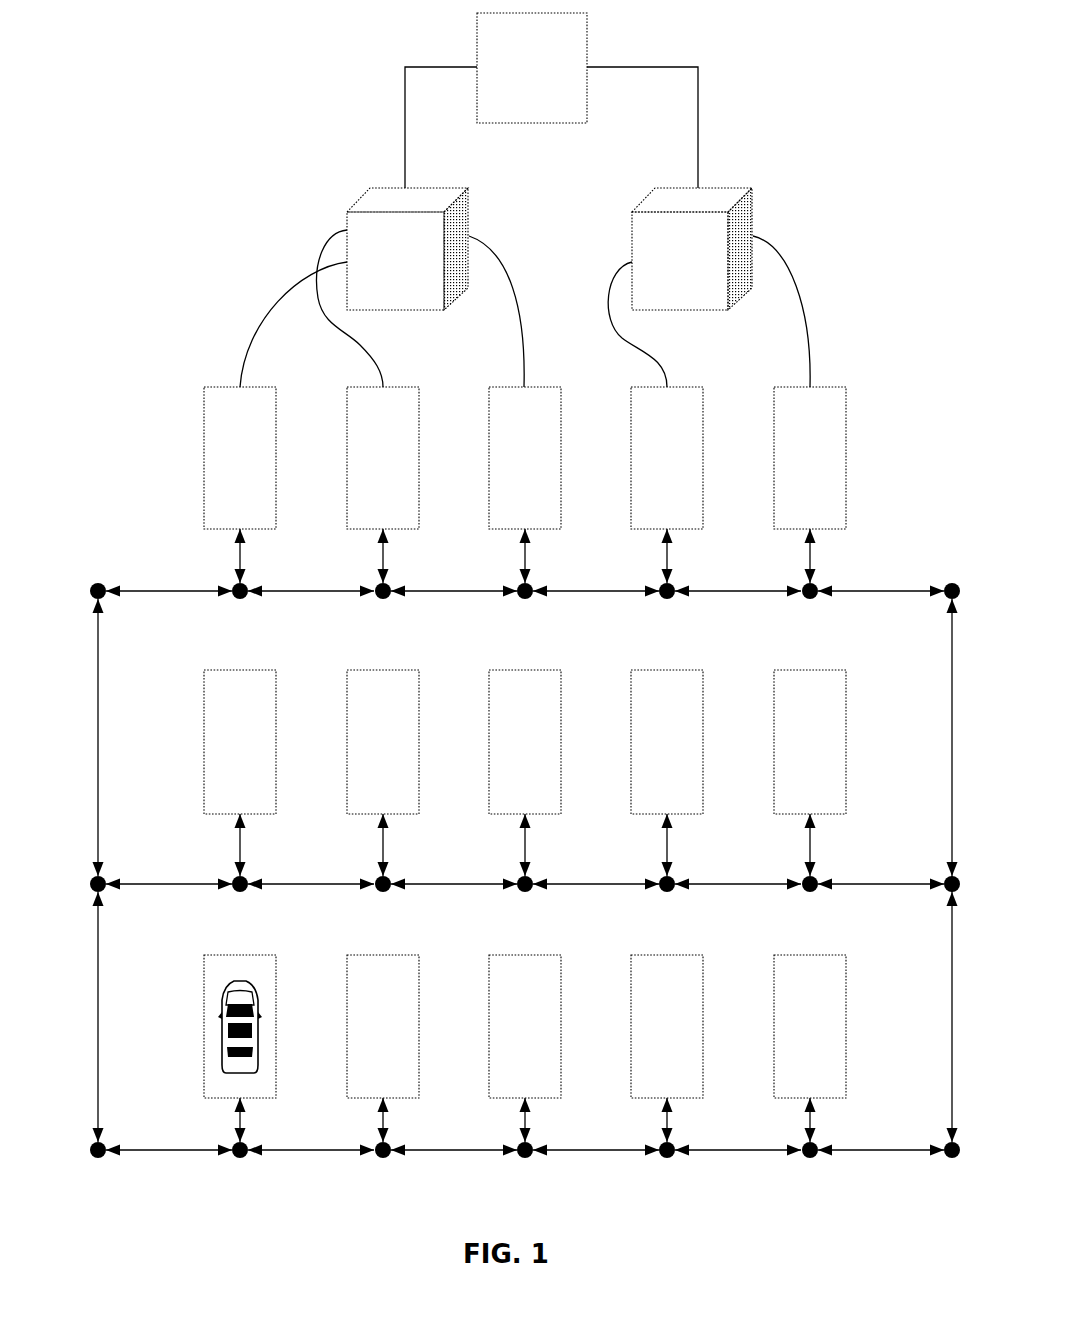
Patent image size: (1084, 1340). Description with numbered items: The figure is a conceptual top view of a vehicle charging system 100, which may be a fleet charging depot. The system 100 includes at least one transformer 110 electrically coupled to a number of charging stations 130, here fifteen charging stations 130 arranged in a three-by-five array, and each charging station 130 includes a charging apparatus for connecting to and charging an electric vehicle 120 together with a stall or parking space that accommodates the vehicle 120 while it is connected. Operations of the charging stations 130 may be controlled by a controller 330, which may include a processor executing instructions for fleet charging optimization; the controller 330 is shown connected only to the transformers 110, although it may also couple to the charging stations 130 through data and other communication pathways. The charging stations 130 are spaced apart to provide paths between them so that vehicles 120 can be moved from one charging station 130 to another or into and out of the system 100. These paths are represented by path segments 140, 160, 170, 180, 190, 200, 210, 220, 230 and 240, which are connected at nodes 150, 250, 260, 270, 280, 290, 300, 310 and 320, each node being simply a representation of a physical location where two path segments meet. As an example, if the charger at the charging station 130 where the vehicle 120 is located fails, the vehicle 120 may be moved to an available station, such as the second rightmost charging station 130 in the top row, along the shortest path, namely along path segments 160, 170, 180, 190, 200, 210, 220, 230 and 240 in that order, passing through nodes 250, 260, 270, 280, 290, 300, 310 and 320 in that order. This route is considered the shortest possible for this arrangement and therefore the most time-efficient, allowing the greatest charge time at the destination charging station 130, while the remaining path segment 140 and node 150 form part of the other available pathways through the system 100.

The vehicle charging system 100 is at (138, 236).
The transformer 110 is at (390, 188).
The electric vehicle 120 is at (260, 1028).
The charging station 130 is at (684, 469).
The path segment 140 is at (773, 1148).
The node 150 is at (806, 1160).
The path segment 160 is at (246, 1104).
The path segment 170 is at (195, 1148).
The path segment 180 is at (97, 1004).
The path segment 190 is at (97, 745).
The path segment 200 is at (196, 590).
The path segment 210 is at (345, 590).
The path segment 220 is at (487, 590).
The path segment 230 is at (629, 590).
The path segment 240 is at (672, 540).
The node 250 is at (236, 1160).
The node 260 is at (93, 1143).
The node 270 is at (93, 878).
The node 280 is at (93, 585).
The node 290 is at (237, 600).
The node 300 is at (380, 600).
The node 310 is at (522, 600).
The node 320 is at (665, 600).
The controller 330 is at (548, 78).